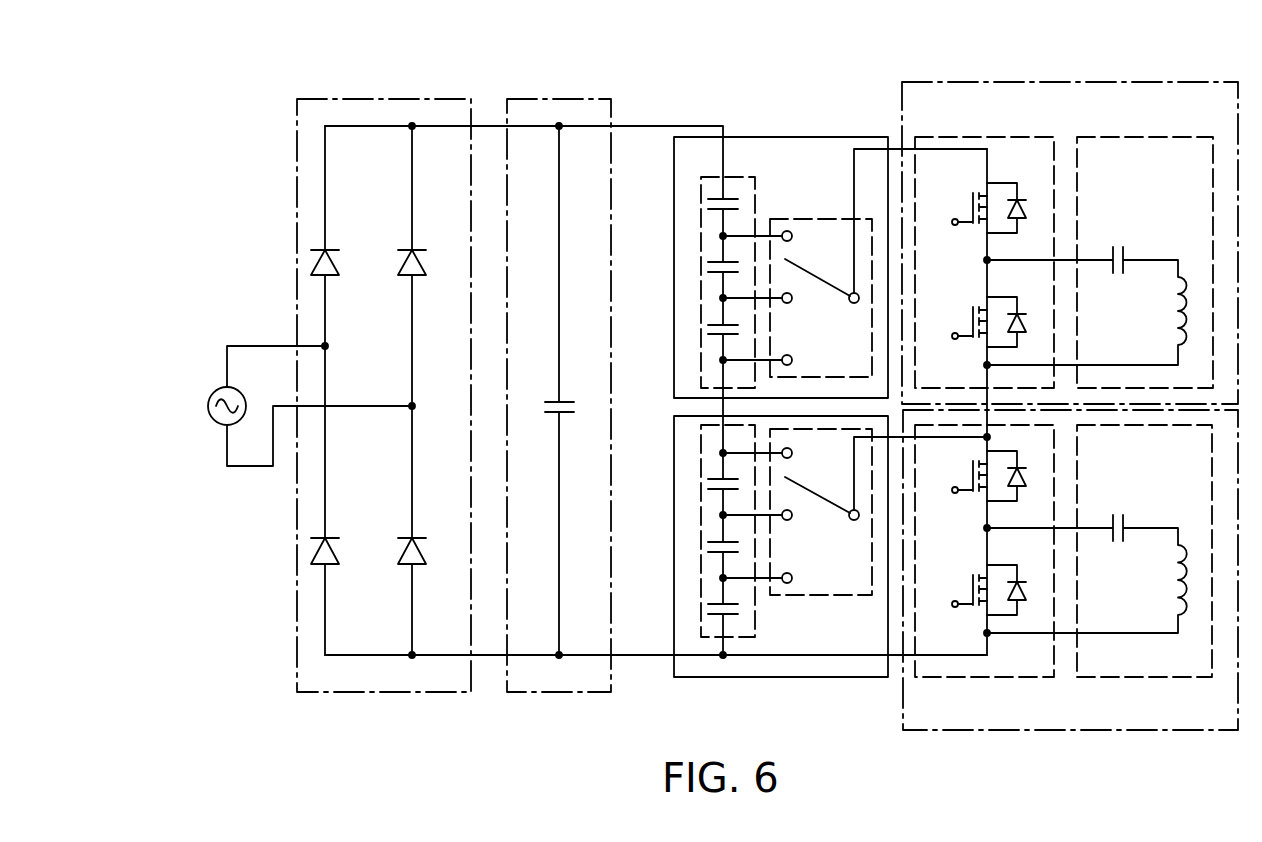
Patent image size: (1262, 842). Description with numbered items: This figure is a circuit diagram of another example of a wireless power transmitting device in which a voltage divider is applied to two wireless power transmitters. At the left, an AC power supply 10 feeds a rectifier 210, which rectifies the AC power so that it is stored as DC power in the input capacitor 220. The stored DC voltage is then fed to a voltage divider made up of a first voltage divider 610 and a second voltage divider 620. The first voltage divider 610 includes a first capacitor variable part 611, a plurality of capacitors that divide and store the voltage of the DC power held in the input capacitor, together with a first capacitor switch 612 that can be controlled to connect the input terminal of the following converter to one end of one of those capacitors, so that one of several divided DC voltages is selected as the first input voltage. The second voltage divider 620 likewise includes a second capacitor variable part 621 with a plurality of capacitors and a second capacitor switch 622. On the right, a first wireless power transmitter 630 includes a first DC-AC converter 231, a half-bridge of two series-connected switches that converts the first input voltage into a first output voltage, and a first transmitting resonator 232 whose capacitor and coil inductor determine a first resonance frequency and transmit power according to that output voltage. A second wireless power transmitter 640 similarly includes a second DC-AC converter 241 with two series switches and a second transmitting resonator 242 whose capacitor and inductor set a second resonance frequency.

The AC power supply 10 is at (213, 393).
The rectifier 210 is at (427, 99).
The input capacitor 220 is at (568, 99).
The first voltage divider 610 is at (830, 246).
The first capacitor variable part 611 is at (755, 197).
The first capacitor switch 612 is at (840, 218).
The second voltage divider 620 is at (830, 569).
The second capacitor variable part 621 is at (755, 603).
The second capacitor switch 622 is at (828, 595).
The first wireless power transmitter 630 is at (1073, 236).
The first DC-AC converter 231 is at (1012, 137).
The first transmitting resonator 232 is at (1170, 137).
The second wireless power transmitter 640 is at (1073, 593).
The second DC-AC converter 241 is at (1010, 677).
The second transmitting resonator 242 is at (1103, 574).